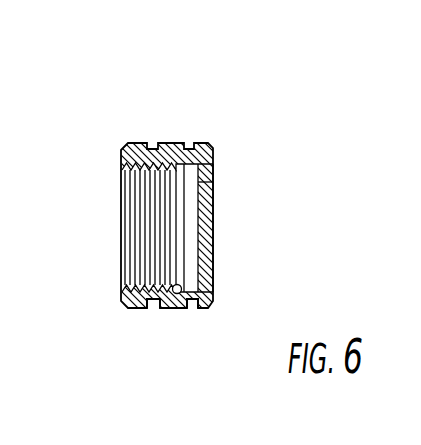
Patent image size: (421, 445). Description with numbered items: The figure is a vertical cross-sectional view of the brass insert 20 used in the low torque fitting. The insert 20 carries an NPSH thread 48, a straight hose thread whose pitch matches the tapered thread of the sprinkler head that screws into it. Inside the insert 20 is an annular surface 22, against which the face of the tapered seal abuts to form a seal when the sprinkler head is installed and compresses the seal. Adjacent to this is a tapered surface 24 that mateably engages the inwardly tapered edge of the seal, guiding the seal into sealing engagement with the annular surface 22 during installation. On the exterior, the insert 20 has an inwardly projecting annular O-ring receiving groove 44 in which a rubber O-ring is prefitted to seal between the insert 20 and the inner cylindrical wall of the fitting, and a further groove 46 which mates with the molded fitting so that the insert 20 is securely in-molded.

The brass insert 20 is at (105, 126).
The annular surface 22 is at (188, 174).
The tapered surface 24 is at (180, 192).
The O-ring receiving groove 44 is at (191, 303).
The groove 46 is at (154, 303).
The NPSH thread 48 is at (144, 183).